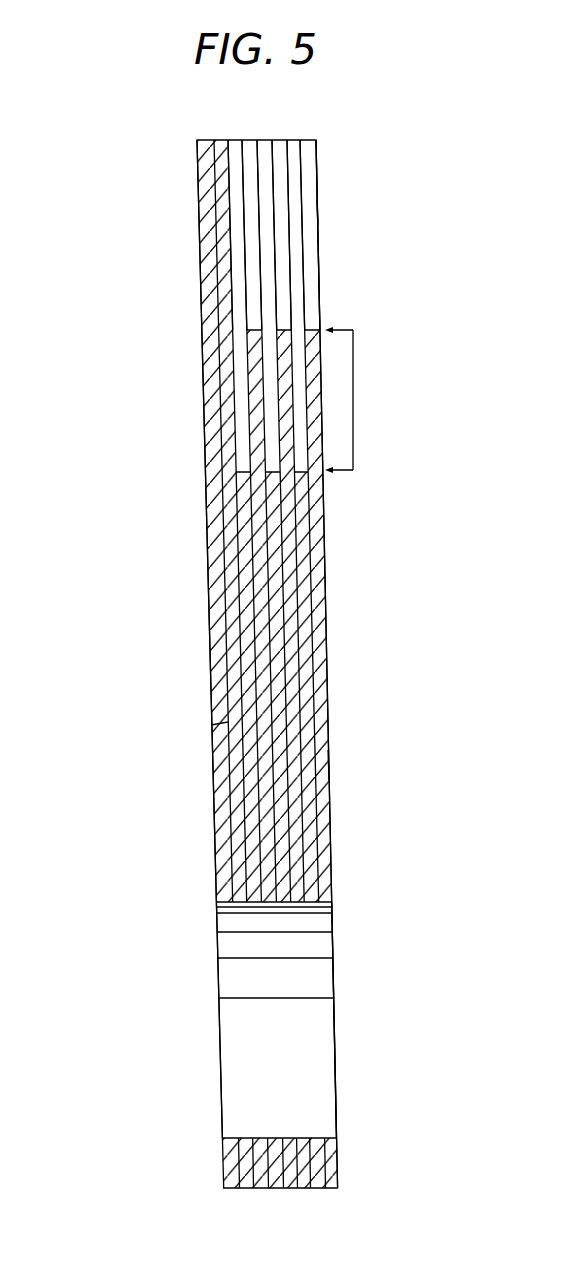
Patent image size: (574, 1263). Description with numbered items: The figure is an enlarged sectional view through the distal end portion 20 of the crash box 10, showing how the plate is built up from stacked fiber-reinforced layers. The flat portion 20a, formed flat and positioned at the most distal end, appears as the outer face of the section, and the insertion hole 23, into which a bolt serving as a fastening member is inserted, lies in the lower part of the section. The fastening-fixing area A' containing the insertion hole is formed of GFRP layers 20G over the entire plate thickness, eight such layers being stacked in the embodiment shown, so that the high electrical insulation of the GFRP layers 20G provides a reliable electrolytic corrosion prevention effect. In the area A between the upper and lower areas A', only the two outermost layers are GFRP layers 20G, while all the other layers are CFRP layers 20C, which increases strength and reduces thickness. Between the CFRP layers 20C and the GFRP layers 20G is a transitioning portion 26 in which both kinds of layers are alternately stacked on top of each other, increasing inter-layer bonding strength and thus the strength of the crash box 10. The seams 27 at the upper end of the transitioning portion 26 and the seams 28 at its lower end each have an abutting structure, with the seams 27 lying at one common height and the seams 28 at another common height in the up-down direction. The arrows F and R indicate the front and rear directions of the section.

The crash box 10 is at (380, 527).
The distal end portion 20 is at (206, 494).
The flat portion 20a is at (203, 373).
The CFRP layers 20C is at (280, 250).
The GFRP layers 20G is at (258, 729).
The insertion hole 23 is at (318, 1032).
The transitioning portion 26 is at (353, 399).
The seams 27 is at (250, 328).
The seams 28 is at (300, 471).
The area A is at (343, 205).
The area A' is at (361, 763).
The front direction F is at (127, 618).
The rear direction R is at (393, 613).